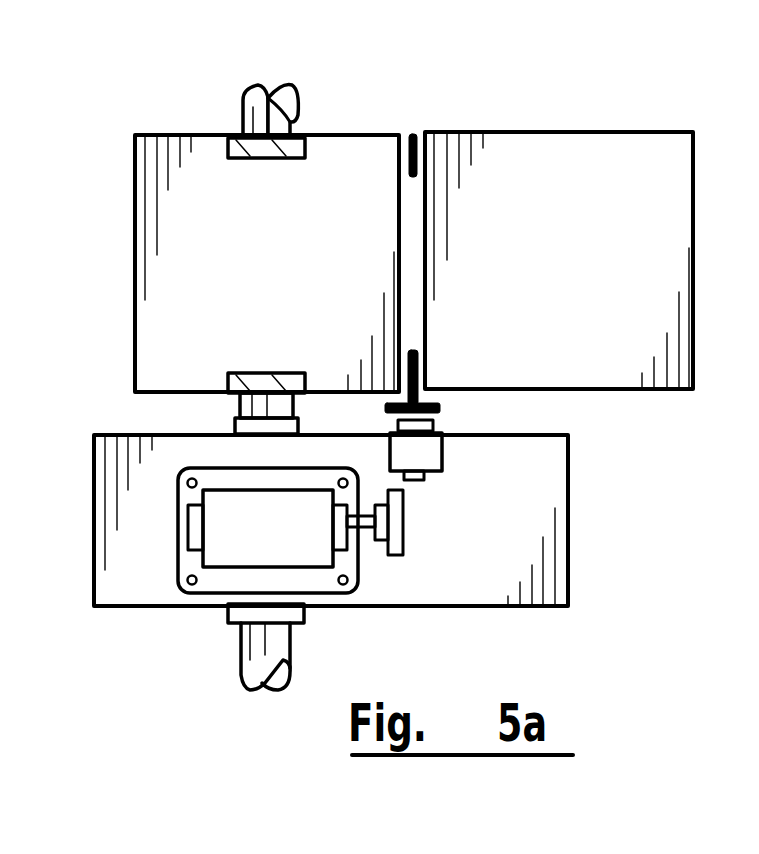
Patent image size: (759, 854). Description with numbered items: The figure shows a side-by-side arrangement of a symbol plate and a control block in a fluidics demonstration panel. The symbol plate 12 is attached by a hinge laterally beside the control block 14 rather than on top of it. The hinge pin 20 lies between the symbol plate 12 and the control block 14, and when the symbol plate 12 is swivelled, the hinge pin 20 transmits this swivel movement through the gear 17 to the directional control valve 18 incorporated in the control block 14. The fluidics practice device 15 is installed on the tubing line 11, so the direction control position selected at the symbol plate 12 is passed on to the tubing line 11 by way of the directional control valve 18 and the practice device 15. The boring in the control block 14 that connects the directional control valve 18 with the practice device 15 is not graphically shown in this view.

The tubing line 11 is at (257, 85).
The symbol plate 12 is at (555, 132).
The control block 14 is at (568, 503).
The practice device 15 is at (313, 557).
The gear 17 is at (440, 406).
The directional control valve 18 is at (442, 442).
The hinge pin 20 is at (413, 133).